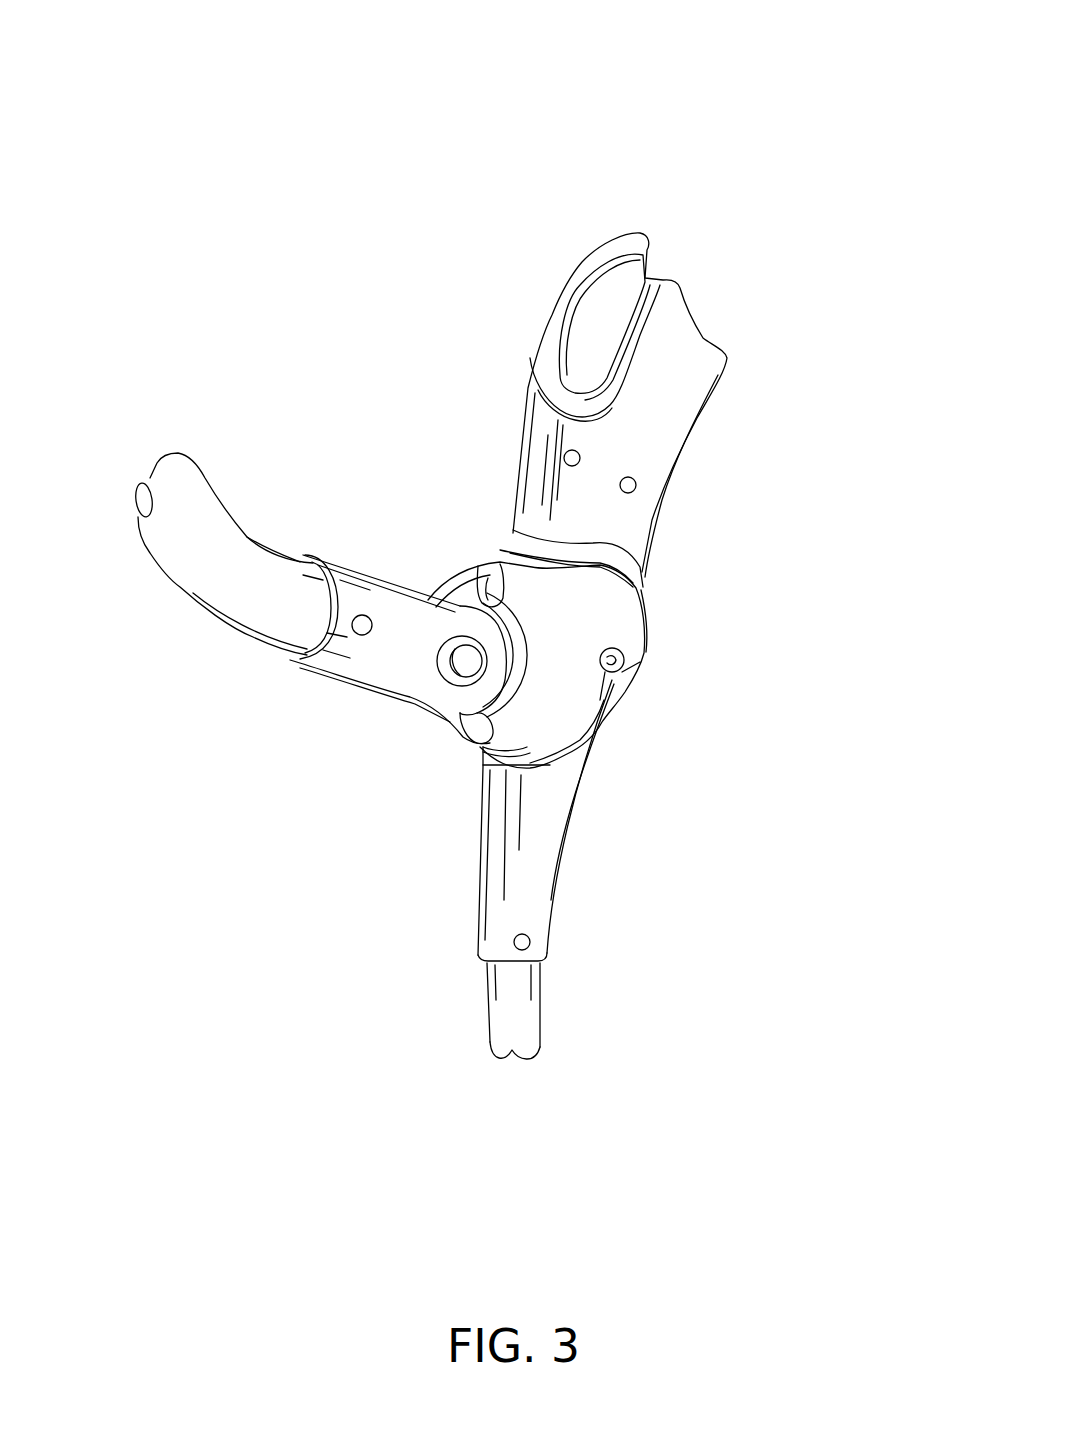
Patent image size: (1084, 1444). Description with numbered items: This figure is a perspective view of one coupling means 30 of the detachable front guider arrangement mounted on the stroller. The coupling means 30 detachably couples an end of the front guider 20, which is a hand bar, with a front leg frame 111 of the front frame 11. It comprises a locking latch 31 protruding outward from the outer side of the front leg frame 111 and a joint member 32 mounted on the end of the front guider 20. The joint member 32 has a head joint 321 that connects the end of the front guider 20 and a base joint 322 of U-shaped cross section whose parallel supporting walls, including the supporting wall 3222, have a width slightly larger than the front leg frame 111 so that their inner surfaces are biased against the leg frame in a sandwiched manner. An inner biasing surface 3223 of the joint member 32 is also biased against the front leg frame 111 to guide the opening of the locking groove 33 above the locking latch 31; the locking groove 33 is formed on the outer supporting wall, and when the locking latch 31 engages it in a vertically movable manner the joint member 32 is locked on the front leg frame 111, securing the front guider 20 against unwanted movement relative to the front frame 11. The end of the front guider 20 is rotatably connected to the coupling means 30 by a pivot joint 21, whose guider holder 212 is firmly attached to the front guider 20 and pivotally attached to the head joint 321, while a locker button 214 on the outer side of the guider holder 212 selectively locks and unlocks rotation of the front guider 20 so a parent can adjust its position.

The front frame 11 is at (723, 972).
The front leg frame 111 is at (513, 1003).
The front guider 20 is at (177, 557).
The pivot joint 21 is at (320, 827).
The guider holder 212 is at (382, 655).
The locker button 214 is at (467, 658).
The coupling means 30 is at (820, 220).
The locking latch 31 is at (622, 652).
The joint member 32 is at (444, 358).
The head joint 321 is at (460, 585).
The base joint 322 is at (816, 459).
The supporting wall 3222 is at (613, 600).
The inner biasing surface 3223 is at (521, 507).
The locking groove 33 is at (612, 685).